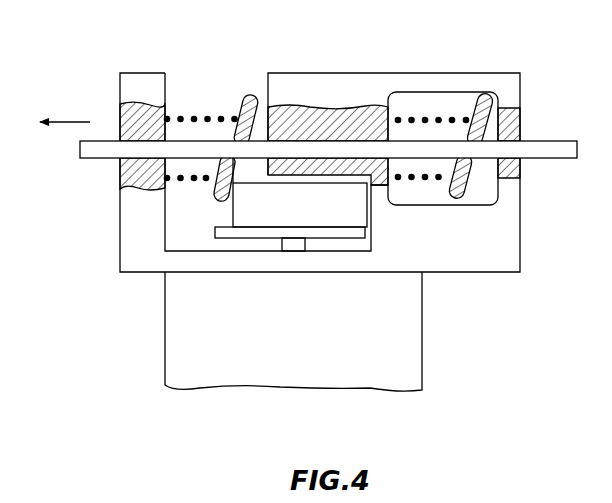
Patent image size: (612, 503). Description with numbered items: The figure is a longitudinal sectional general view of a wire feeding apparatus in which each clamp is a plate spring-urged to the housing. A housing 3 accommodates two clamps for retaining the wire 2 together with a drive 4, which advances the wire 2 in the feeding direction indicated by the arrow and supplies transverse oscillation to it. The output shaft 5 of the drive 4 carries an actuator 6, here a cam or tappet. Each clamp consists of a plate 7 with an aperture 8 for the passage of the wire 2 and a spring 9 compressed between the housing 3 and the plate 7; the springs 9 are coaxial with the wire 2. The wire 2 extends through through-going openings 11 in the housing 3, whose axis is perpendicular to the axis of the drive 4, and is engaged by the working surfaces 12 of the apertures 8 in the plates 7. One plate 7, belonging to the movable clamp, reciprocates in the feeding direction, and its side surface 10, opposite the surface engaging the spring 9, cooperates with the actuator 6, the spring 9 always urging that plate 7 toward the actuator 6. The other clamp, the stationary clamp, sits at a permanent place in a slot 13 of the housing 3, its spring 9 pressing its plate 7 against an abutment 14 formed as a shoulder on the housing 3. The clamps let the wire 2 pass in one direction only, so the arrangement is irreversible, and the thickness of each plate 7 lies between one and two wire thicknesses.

The wire 2 is at (562, 141).
The housing 3 is at (283, 80).
The drive 4 is at (324, 380).
The output shaft 5 is at (290, 255).
The actuator 6 is at (357, 200).
The plate 7 is at (255, 98).
The aperture 8 is at (238, 160).
The spring 9 is at (179, 112).
The side surface 10 is at (243, 180).
The through-going openings 11 is at (135, 132).
The working surfaces 12 is at (230, 156).
The slot 13 is at (442, 100).
The abutment 14 is at (458, 204).